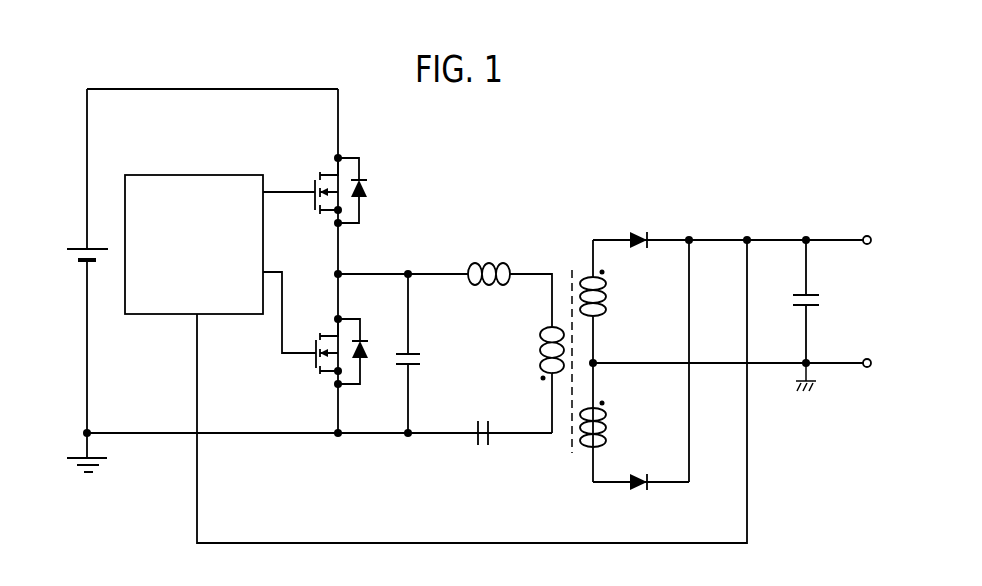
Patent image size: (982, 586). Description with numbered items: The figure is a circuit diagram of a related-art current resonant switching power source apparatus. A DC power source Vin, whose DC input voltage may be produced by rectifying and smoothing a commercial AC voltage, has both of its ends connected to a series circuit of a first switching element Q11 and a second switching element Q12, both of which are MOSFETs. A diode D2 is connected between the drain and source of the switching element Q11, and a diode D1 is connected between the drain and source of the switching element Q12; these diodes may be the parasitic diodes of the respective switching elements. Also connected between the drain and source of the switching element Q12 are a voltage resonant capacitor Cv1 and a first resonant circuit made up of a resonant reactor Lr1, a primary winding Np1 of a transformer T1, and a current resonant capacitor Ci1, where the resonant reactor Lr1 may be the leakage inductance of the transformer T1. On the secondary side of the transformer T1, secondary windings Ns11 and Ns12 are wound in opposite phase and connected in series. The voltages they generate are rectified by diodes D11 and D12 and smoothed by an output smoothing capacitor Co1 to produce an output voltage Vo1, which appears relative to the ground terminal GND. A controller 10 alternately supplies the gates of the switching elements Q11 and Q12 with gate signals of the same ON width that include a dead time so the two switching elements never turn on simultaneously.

The controller 10 is at (215, 175).
The DC power source Vin is at (71, 256).
The first switching element Q11 is at (302, 185).
The second switching element Q12 is at (302, 335).
The diode D1 is at (364, 354).
The diode D2 is at (368, 190).
The voltage resonant capacitor Cv1 is at (430, 353).
The current resonant capacitor Ci1 is at (483, 448).
The resonant reactor Lr1 is at (510, 280).
The primary winding Np1 is at (533, 380).
The transformer T1 is at (571, 346).
The secondary winding Ns11 is at (618, 361).
The secondary winding Ns12 is at (619, 424).
The diode D11 is at (636, 226).
The diode D12 is at (637, 498).
The output smoothing capacitor Co1 is at (825, 301).
The output voltage Vo1 is at (868, 227).
The ground terminal GND is at (862, 378).